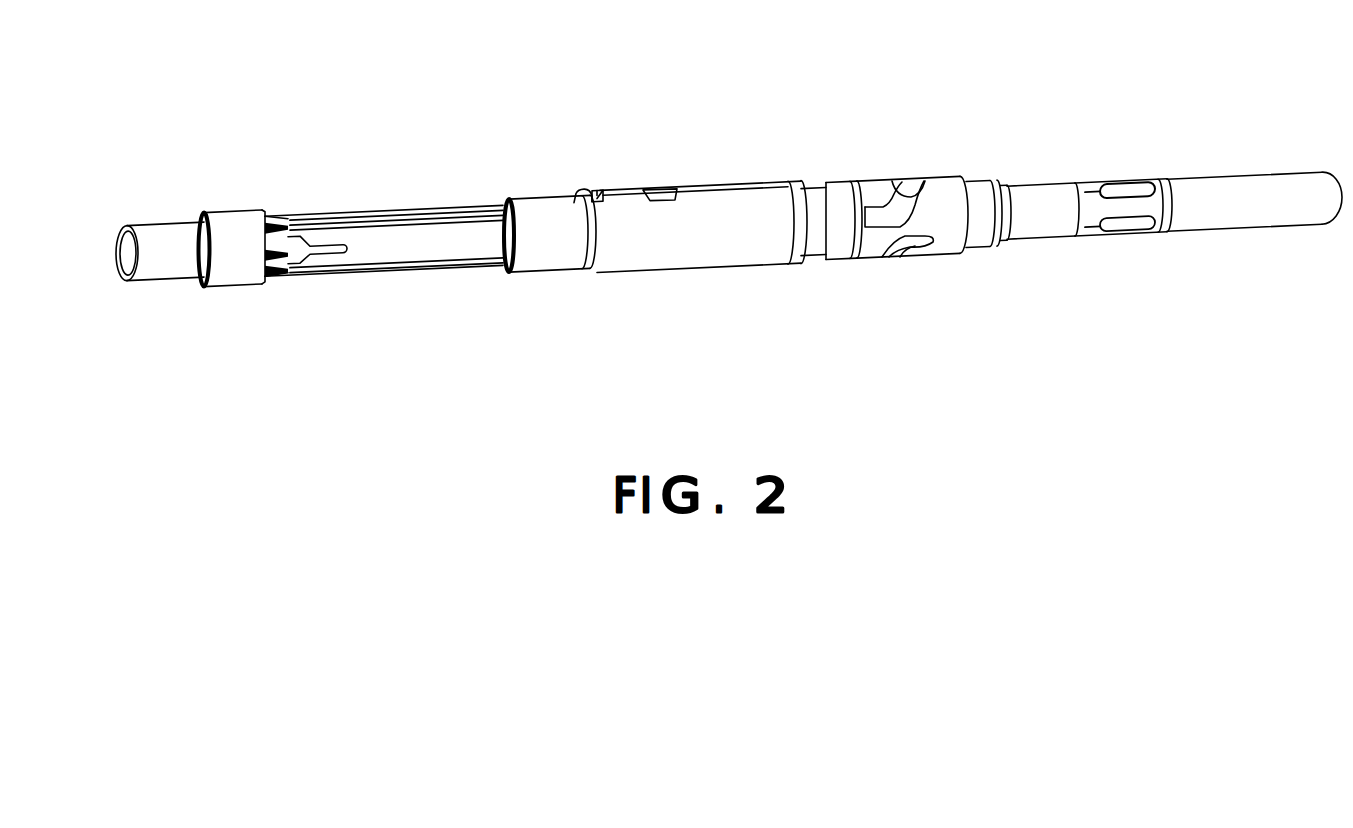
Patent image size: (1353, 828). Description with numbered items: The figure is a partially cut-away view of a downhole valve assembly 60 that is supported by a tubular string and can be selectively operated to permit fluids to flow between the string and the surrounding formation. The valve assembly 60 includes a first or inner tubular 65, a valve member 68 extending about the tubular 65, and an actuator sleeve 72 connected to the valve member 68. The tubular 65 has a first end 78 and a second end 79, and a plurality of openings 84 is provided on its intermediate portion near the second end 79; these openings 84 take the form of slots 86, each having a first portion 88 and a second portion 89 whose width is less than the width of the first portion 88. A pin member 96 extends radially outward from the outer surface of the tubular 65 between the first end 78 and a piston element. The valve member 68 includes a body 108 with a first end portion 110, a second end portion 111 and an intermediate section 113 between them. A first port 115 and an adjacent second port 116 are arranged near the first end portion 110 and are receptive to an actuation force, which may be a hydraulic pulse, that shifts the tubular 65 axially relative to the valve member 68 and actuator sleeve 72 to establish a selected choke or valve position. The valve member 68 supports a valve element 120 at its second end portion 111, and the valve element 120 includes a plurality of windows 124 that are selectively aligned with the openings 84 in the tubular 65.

The valve assembly 60 is at (333, 78).
The inner tubular 65 is at (1042, 267).
The valve member 68 is at (715, 305).
The actuator sleeve 72 is at (226, 189).
The first end 78 is at (148, 226).
The second end 79 is at (1323, 178).
The openings 84 is at (1112, 150).
The slots 86 is at (1133, 214).
The first portion 88 is at (1141, 180).
The second portion 89 is at (1090, 182).
The pin member 96 is at (500, 213).
The body 108 is at (599, 274).
The first end portion 110 is at (590, 214).
The second end portion 111 is at (805, 250).
The intermediate section 113 is at (710, 213).
The first port 115 is at (594, 160).
The second port 116 is at (616, 226).
The valve element 120 is at (937, 158).
The windows 124 is at (933, 180).